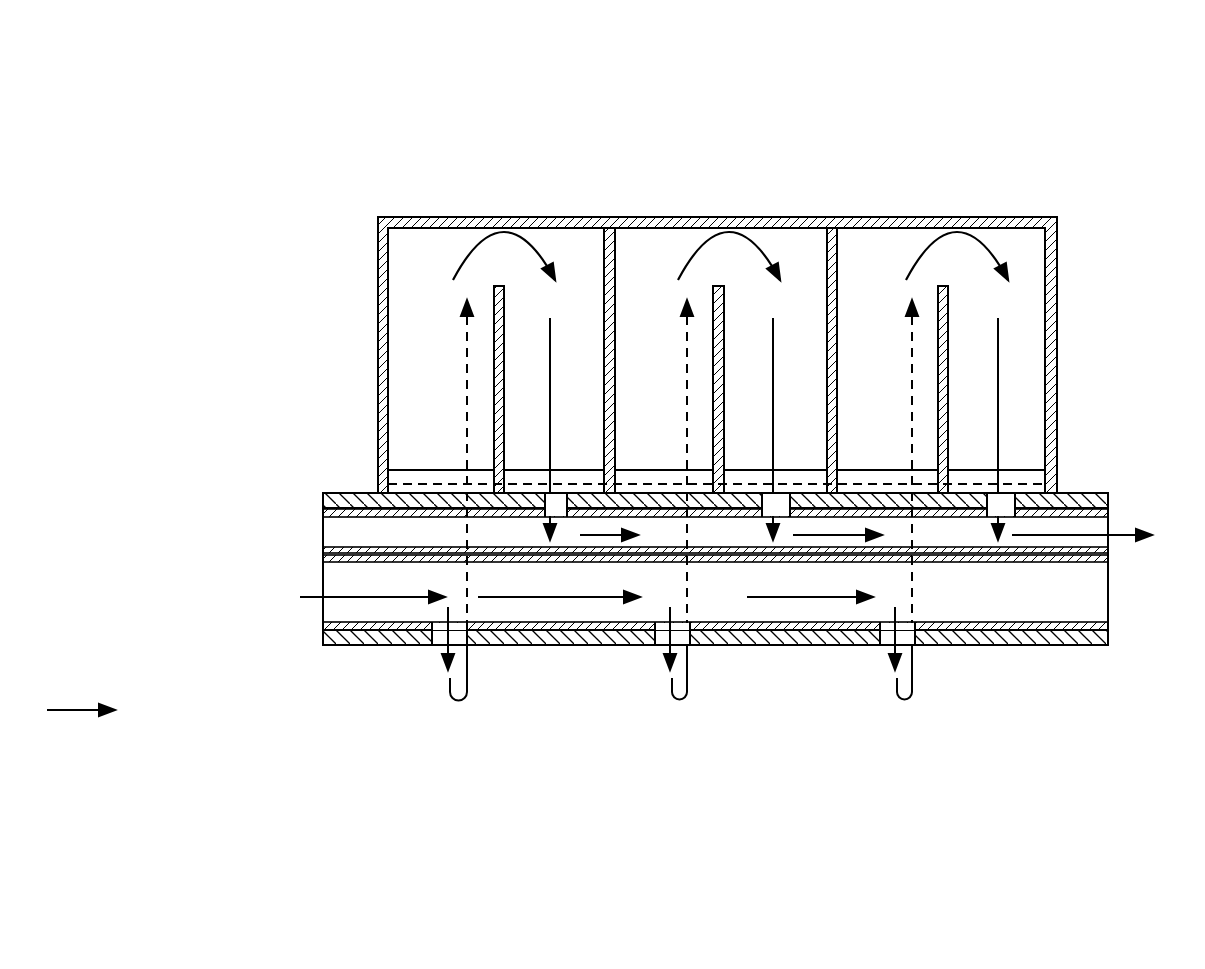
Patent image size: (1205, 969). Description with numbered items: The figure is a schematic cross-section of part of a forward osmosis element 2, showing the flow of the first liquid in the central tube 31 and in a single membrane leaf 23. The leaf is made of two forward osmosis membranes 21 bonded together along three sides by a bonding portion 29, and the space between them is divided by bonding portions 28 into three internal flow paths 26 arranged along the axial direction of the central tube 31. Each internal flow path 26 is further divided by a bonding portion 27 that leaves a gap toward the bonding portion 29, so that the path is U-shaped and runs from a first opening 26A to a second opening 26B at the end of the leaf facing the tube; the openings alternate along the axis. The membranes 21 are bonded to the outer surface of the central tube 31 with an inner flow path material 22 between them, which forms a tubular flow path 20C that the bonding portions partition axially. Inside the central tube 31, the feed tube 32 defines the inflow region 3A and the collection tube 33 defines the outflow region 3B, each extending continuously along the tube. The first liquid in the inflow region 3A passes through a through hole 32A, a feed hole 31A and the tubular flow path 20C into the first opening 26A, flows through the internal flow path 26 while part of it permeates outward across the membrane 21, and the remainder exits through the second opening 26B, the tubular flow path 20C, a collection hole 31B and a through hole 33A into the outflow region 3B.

The heat exchange unit 2 is at (1128, 158).
The membrane leaf 23 is at (1060, 276).
The bonding portion 29 is at (1050, 343).
The bonding portions 28 is at (617, 250).
The bonding portion 27 is at (504, 365).
The internal flow path 26 is at (448, 243).
The forward osmosis membrane 21 is at (1020, 470).
The inner flow path material 22 is at (1057, 489).
The tubular flow path 20C is at (405, 478).
The collection tube 33 is at (323, 493).
The through hole 33A is at (567, 512).
The collection hole 31B is at (562, 512).
The central tube 31 is at (338, 648).
The feed tube 32 is at (358, 648).
The feed hole 31A is at (434, 648).
The through hole 32A is at (432, 648).
The first opening 26A is at (443, 445).
The second opening 26B is at (532, 445).
The inflow region 3A is at (703, 605).
The outflow region 3B is at (703, 545).